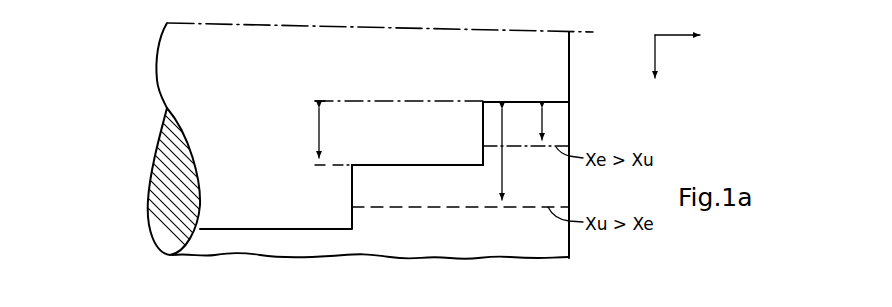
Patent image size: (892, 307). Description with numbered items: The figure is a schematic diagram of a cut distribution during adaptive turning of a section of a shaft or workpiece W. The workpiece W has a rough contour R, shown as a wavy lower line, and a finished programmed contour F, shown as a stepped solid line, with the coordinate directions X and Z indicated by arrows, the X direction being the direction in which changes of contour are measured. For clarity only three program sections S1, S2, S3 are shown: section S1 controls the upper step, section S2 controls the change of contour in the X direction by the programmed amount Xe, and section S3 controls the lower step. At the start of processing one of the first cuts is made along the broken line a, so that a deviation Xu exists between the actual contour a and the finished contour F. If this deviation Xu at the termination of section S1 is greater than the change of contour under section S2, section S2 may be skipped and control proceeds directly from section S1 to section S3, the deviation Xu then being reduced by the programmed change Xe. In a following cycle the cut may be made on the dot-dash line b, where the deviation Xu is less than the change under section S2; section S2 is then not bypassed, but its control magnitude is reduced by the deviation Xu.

The workpiece W is at (192, 38).
The finished contour F is at (254, 229).
The rough contour R is at (433, 258).
The programmed section S1 is at (523, 102).
The programmed section S2 is at (483, 118).
The programmed section S3 is at (395, 165).
The broken line a is at (437, 207).
The dot-dash line b is at (548, 148).
The programmed change Xe is at (320, 133).
The deviation Xu is at (549, 154).
The X direction X is at (655, 71).
The Z direction Z is at (689, 38).